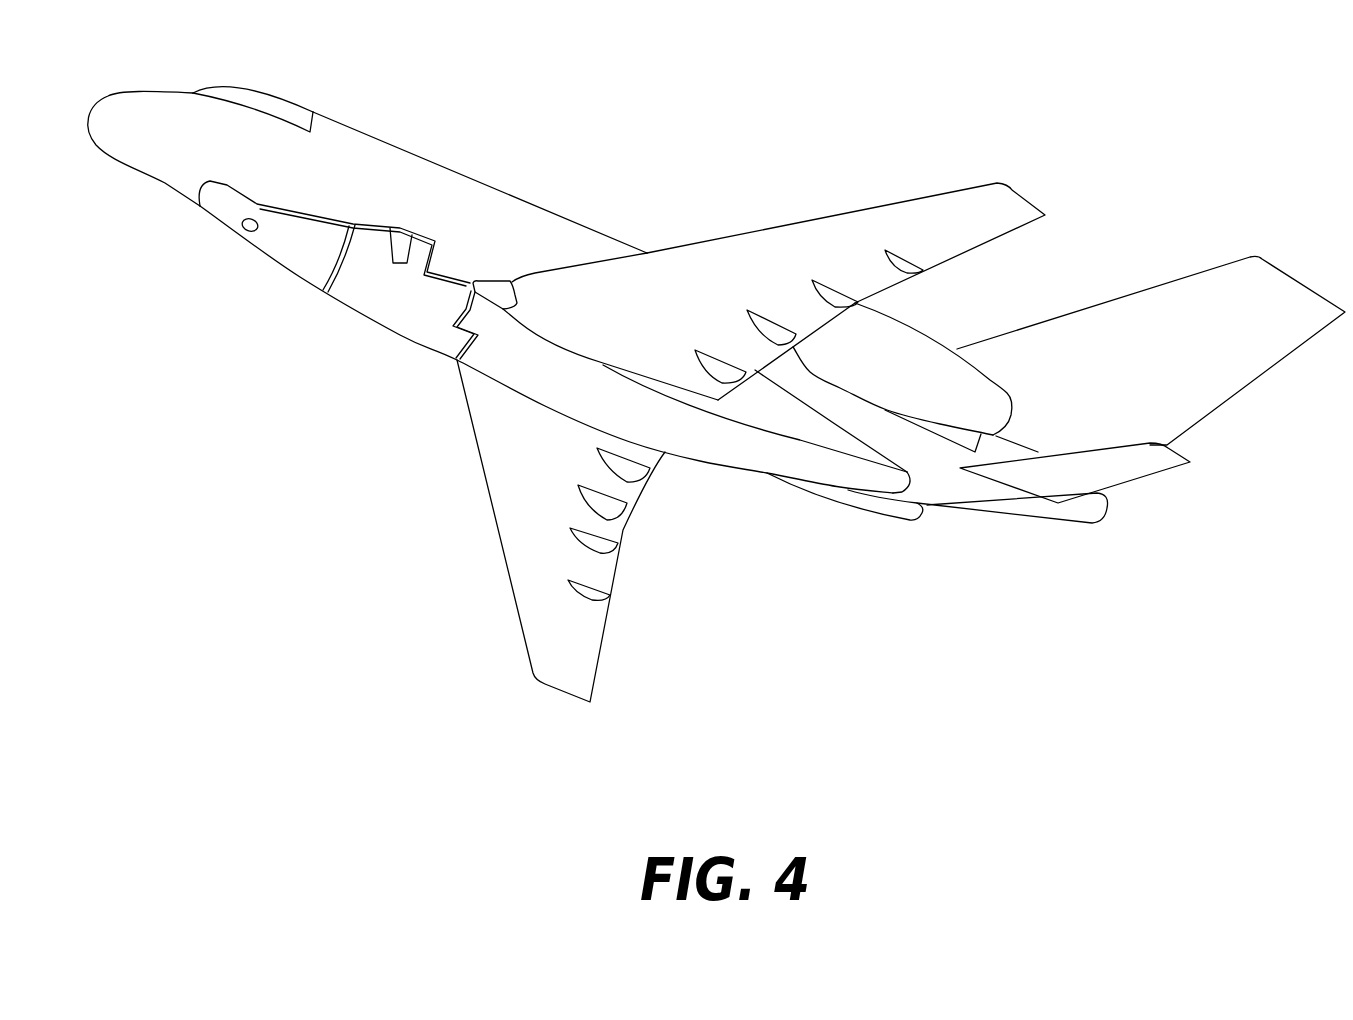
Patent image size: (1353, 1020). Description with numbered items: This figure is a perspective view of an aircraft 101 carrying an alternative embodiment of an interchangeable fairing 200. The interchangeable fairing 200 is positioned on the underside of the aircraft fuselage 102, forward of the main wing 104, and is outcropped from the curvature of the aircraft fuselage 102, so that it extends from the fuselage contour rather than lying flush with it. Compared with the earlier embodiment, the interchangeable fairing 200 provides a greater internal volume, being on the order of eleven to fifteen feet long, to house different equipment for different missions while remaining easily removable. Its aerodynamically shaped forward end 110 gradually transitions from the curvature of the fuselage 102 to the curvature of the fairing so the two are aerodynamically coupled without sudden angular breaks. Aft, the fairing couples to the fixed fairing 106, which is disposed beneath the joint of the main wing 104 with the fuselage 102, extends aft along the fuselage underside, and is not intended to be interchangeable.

The aircraft 101 is at (682, 132).
The aircraft fuselage 102 is at (408, 178).
The main wing 104 is at (538, 530).
The fixed fairing 106 is at (487, 262).
The aerodynamically shaped forward end 110 is at (216, 211).
The interchangeable fairing 200 is at (298, 325).